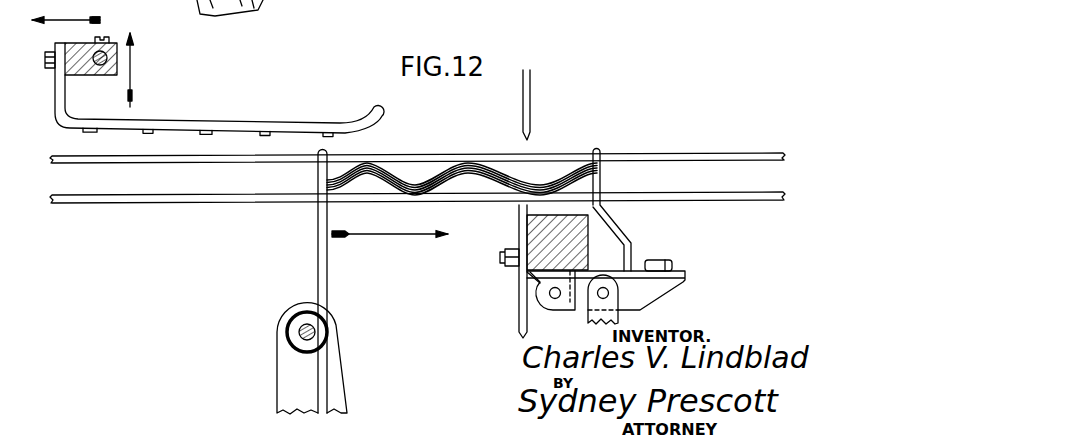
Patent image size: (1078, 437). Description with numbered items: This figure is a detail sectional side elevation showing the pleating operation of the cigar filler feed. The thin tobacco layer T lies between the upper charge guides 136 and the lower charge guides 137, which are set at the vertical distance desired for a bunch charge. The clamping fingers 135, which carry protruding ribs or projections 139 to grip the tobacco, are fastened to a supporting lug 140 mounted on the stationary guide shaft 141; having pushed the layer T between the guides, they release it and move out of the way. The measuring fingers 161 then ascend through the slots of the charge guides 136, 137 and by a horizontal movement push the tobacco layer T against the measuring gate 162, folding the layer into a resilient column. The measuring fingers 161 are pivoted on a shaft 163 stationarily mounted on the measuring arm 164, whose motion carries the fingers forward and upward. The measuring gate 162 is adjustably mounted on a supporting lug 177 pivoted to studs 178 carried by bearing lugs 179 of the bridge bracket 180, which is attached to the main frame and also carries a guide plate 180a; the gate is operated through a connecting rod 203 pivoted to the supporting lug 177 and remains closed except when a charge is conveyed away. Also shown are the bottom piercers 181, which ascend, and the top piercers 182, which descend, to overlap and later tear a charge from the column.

The clamping fingers 135 is at (268, 123).
The upper charge guides 136 is at (179, 157).
The lower charge guides 137 is at (247, 198).
The protruding ribs or projections 139 is at (206, 134).
The supporting lug 140 is at (105, 47).
The stationary guide shaft 141 is at (98, 68).
The measuring fingers 161 is at (326, 159).
The measuring gate 162 is at (599, 150).
The shaft 163 is at (306, 325).
The measuring arm 164 is at (343, 397).
The supporting lug 177 is at (672, 285).
The studs 178 is at (553, 311).
The bearing lugs 179 is at (540, 283).
The bridge bracket 180 is at (588, 261).
The guide plate 180a is at (512, 251).
The bottom piercers 181 is at (519, 323).
The top piercers 182 is at (530, 96).
The connecting rod 203 is at (618, 313).
The tobacco layer T is at (408, 182).